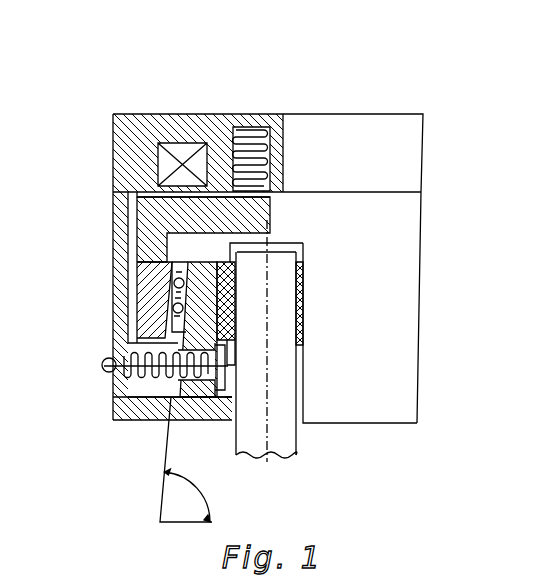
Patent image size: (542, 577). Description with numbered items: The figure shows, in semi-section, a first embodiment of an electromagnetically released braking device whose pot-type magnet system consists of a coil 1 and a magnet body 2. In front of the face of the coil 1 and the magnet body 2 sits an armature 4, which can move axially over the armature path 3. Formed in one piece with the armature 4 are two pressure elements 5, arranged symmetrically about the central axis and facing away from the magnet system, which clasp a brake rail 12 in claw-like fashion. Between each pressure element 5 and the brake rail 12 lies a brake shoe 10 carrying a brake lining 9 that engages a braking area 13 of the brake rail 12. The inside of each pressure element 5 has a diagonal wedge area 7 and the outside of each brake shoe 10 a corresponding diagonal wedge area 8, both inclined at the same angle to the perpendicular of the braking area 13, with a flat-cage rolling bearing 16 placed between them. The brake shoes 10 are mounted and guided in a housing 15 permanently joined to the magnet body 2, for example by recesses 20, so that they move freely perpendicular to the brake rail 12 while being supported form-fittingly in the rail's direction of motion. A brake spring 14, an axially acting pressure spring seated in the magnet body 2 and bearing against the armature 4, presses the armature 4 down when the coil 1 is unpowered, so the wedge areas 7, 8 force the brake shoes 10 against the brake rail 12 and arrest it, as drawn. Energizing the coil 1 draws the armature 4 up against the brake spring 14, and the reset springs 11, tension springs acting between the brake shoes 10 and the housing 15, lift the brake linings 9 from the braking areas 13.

The coil 1 is at (165, 155).
The magnet body 2 is at (200, 128).
The armature path 3 is at (155, 190).
The armature 4 is at (168, 207).
The pressure elements 5 is at (176, 282).
The diagonal wedge area 7 is at (150, 243).
The diagonal wedge area 8 is at (157, 420).
The brake linings 9 is at (237, 283).
The brake shoe 10 is at (217, 400).
The reset springs 11 is at (104, 370).
The brake rail 12 is at (283, 432).
The braking areas 13 is at (300, 340).
The brake spring 14 is at (263, 133).
The housing 15 is at (370, 240).
The flat-cage rolling bearing 16 is at (176, 308).
The recesses 20 is at (128, 400).